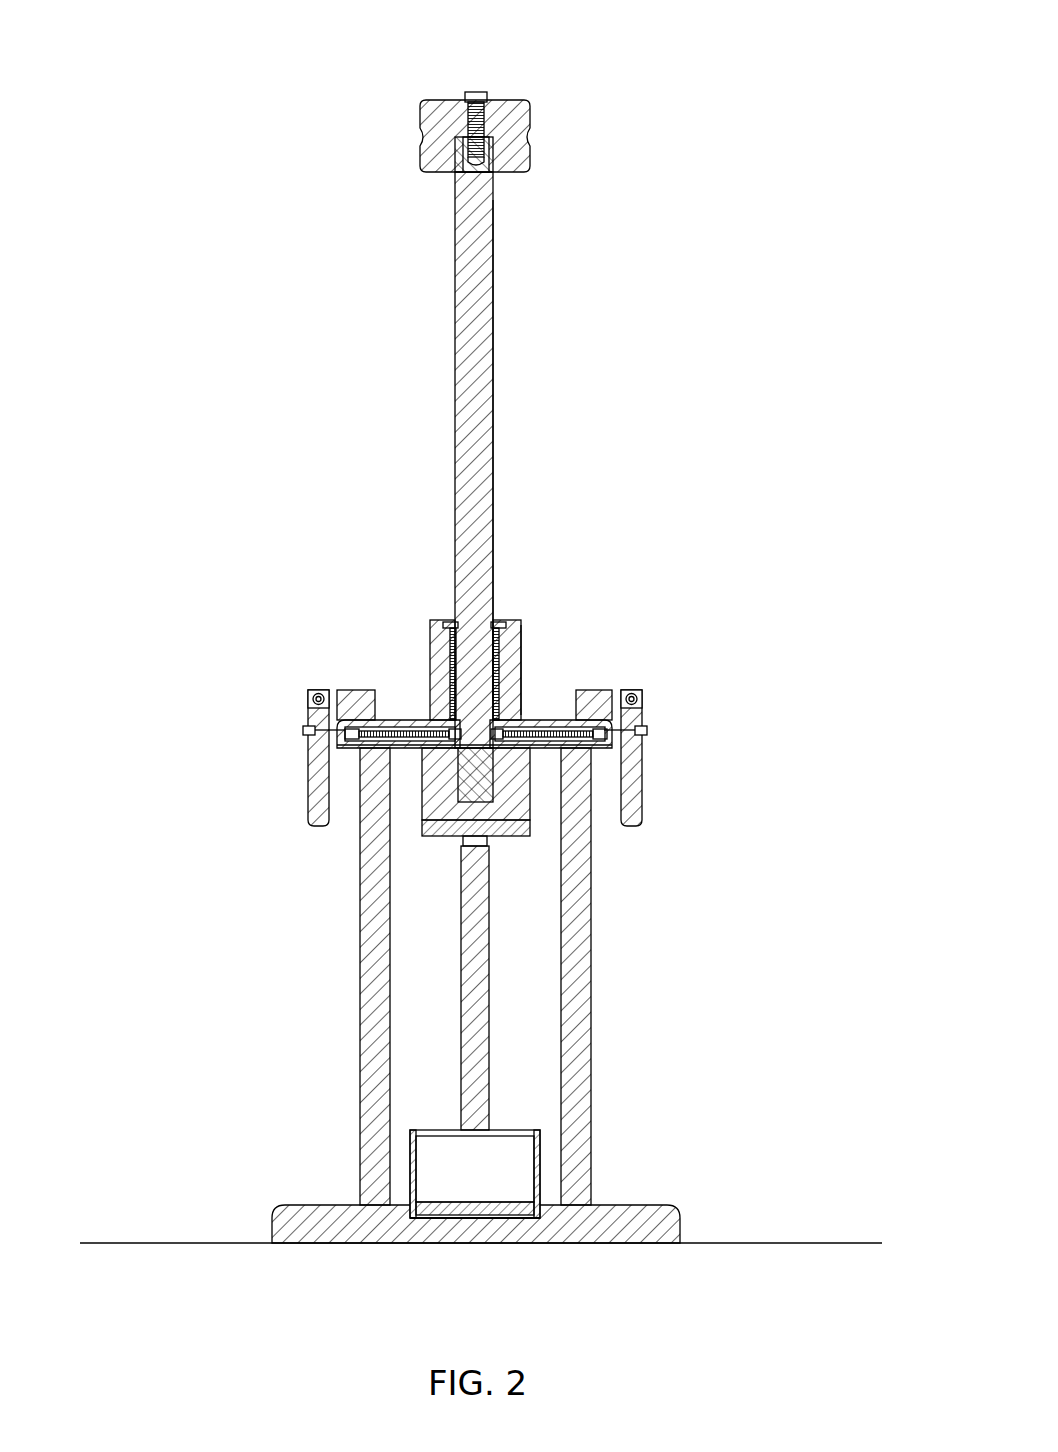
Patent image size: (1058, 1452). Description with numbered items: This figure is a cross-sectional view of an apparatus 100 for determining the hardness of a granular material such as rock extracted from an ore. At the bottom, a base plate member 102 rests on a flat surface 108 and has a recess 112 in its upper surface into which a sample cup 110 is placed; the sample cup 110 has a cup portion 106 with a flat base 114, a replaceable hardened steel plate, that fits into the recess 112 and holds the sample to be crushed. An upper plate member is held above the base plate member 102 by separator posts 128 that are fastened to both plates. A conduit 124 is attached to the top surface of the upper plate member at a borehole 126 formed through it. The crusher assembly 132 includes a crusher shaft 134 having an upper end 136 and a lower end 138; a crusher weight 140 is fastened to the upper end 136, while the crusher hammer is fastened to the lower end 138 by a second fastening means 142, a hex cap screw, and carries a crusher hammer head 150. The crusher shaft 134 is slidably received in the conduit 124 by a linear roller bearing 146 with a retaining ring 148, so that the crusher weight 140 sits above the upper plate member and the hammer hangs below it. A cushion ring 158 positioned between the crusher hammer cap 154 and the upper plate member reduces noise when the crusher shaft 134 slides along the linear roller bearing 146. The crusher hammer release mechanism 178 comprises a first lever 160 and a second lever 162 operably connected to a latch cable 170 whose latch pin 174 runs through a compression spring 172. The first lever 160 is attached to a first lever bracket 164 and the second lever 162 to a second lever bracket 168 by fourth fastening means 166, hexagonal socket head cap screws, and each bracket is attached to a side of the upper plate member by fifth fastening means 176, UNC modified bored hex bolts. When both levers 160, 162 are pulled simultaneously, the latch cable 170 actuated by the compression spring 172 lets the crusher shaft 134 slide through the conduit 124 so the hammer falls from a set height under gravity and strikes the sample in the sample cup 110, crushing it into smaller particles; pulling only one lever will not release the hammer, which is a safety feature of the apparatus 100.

The apparatus 100 is at (344, 89).
The base plate member 102 is at (669, 1203).
The cup portion 106 is at (412, 1180).
The flat surface 108 is at (158, 1243).
The sample cup 110 is at (541, 1131).
The recess 112 is at (410, 1217).
The flat base 114 is at (500, 1202).
The conduit 124 is at (432, 660).
The borehole 126 is at (497, 620).
The separator post 128 is at (460, 1042).
The crusher assembly 132 is at (497, 267).
The crusher shaft 134 is at (496, 348).
The upper end 136 is at (493, 158).
The lower end 138 is at (520, 838).
The crusher weight 140 is at (532, 160).
The second fastening means 142 is at (478, 92).
The linear roller bearing 146 is at (512, 665).
The retaining ring 148 is at (447, 622).
The crusher hammer head 150 is at (490, 858).
The crusher hammer cap 154 is at (530, 795).
The cushion ring 158 is at (408, 742).
The first lever 160 is at (340, 752).
The second lever 162 is at (638, 750).
The first lever bracket 164 is at (350, 690).
The fourth fastening means 166 is at (316, 690).
The second lever bracket 168 is at (600, 690).
The latch cable 170 is at (306, 728).
The compression spring 172 is at (442, 745).
The latch pin 174 is at (440, 750).
The fifth fastening means 176 is at (314, 758).
The crusher hammer release mechanism 178 is at (292, 694).